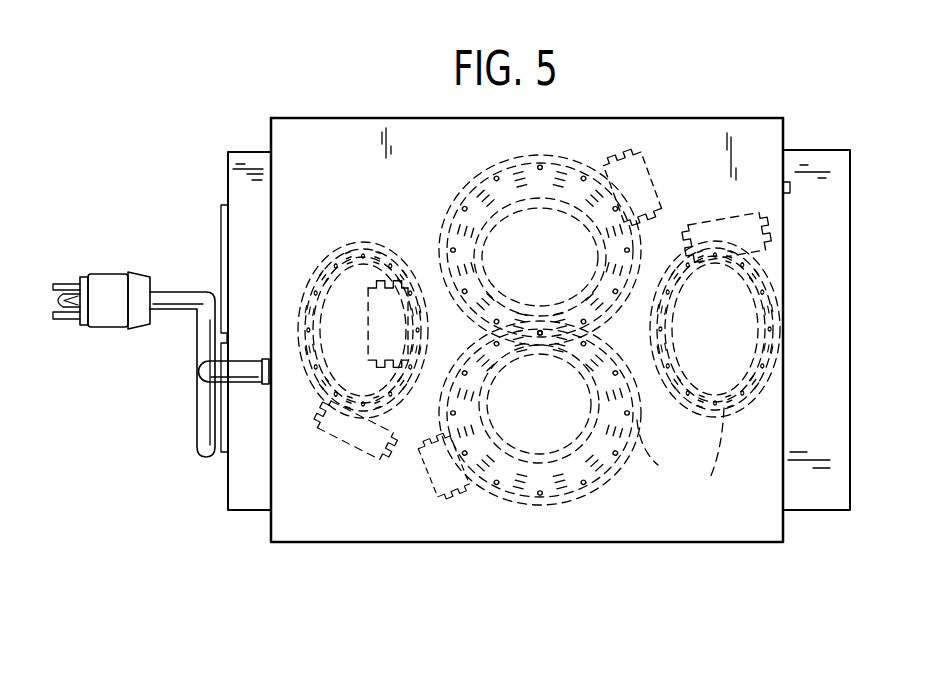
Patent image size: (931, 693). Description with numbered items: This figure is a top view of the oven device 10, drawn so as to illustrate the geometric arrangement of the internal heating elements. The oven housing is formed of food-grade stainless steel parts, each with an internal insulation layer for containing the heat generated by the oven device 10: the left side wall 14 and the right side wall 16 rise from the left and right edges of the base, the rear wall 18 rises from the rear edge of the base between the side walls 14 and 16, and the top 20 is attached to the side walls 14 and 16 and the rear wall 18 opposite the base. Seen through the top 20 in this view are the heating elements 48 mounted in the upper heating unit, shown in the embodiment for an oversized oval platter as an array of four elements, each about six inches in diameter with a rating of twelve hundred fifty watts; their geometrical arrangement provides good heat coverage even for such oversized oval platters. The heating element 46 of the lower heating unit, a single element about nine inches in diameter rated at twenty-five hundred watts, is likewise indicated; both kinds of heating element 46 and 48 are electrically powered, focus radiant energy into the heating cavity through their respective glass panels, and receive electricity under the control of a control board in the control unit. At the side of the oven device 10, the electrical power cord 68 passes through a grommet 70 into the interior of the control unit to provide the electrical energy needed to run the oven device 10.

The oven device 10 is at (296, 70).
The left side wall 14 is at (666, 543).
The right side wall 16 is at (688, 118).
The rear wall 18 is at (268, 527).
The top 20 is at (338, 183).
The heating element 46 is at (641, 420).
The heating element 48 is at (352, 246).
The electrical power cord 68 is at (255, 384).
The grommet 70 is at (270, 357).